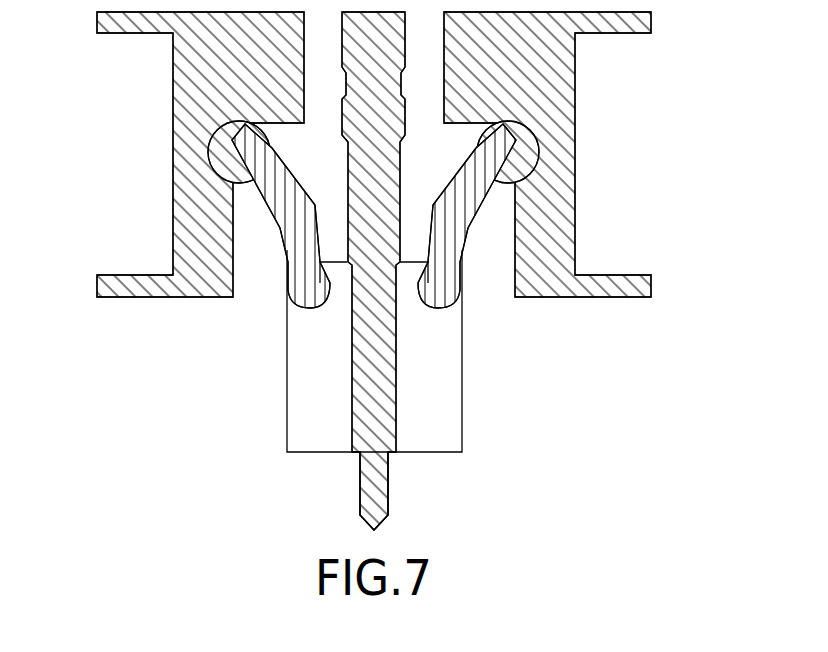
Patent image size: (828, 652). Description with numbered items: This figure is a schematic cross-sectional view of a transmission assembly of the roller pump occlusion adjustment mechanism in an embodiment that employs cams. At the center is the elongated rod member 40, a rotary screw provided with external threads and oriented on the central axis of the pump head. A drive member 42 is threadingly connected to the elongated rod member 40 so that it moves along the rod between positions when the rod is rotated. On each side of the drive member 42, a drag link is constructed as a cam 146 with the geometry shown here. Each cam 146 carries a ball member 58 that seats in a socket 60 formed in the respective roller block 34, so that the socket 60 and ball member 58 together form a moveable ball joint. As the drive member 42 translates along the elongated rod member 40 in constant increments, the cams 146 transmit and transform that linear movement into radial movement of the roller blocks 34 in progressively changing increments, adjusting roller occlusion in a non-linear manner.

The socket 60 is at (193, 125).
The ball member 58 is at (232, 184).
The cam 146 is at (284, 262).
The drive member 42 is at (443, 413).
The roller block 34 is at (580, 278).
The elongated rod member 40 is at (388, 488).